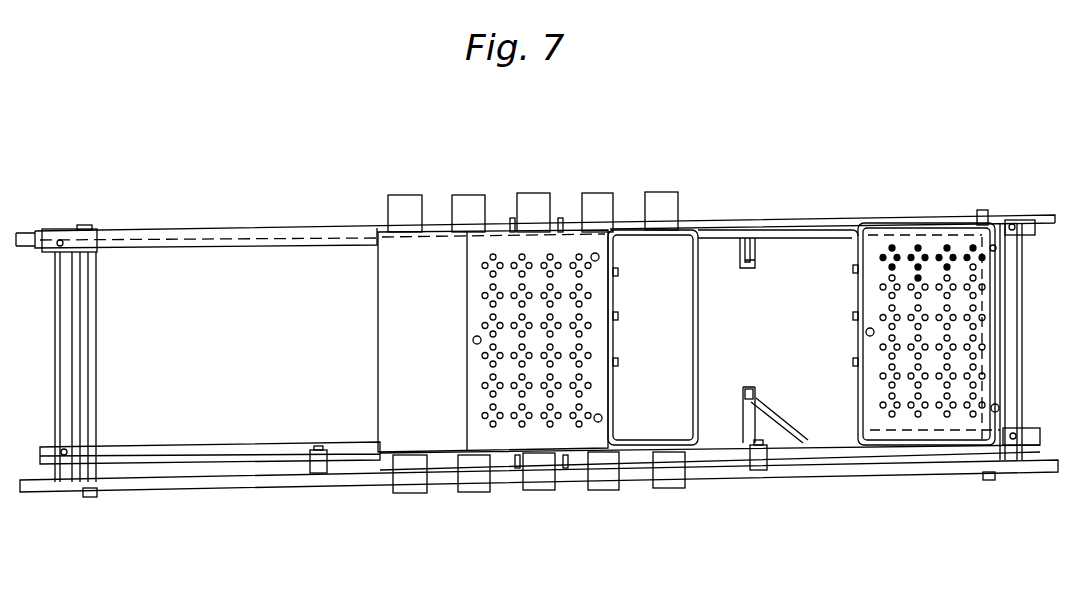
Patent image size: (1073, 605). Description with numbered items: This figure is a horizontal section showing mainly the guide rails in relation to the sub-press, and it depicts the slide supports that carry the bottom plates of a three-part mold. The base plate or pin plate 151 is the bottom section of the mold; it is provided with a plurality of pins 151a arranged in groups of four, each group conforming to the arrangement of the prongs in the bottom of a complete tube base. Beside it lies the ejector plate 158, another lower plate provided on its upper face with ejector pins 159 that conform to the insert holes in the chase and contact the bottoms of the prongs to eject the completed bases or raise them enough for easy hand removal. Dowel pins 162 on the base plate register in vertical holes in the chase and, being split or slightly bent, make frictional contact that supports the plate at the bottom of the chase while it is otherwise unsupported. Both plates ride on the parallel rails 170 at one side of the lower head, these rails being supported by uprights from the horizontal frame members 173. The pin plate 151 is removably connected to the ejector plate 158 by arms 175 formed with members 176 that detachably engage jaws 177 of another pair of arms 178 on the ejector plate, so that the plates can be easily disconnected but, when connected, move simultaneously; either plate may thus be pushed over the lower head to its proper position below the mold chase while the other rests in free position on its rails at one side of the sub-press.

The base plate 151 is at (926, 347).
The pins 151a is at (918, 246).
The ejector plate 158 is at (526, 388).
The ejector pins 159 is at (591, 294).
The dowel pins 162 is at (997, 250).
The parallel rails 170 is at (168, 455).
The horizontal frame members 173 is at (234, 488).
The arms 175 is at (806, 233).
The members 176 is at (752, 258).
The jaws 177 is at (748, 269).
The arms 178 is at (653, 436).